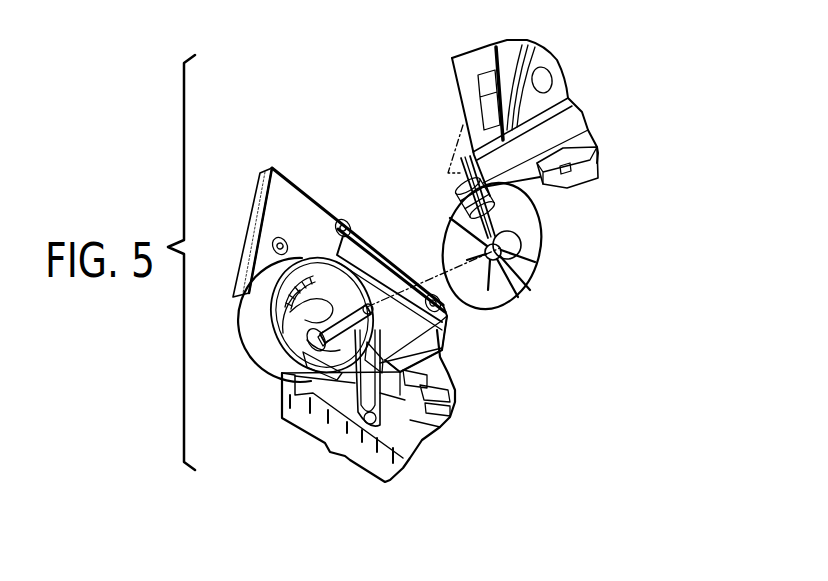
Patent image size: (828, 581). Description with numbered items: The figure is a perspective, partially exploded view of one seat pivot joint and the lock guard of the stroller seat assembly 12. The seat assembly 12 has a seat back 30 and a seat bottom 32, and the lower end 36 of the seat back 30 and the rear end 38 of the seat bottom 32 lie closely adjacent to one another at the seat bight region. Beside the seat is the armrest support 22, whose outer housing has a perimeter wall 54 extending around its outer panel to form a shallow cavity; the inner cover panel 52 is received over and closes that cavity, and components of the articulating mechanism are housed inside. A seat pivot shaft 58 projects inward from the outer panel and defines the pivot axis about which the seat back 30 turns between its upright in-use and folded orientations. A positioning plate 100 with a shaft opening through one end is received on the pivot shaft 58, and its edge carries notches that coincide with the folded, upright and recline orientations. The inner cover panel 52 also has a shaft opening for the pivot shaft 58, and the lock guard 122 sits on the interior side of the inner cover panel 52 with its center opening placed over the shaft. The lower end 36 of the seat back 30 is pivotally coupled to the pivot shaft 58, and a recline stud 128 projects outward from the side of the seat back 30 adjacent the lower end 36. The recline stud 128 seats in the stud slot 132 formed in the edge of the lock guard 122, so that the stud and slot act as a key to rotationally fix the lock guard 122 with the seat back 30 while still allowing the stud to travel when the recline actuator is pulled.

The seat assembly 12 is at (382, 0).
The armrest support 22 is at (260, 381).
The seat back 30 is at (567, 81).
The seat bottom 32 is at (456, 406).
The lower end 36 is at (583, 173).
The rear end 38 is at (435, 330).
The inner cover panel 52 is at (298, 197).
The perimeter wall 54 is at (257, 210).
The seat pivot shaft 58 is at (367, 305).
The positioning plate 100 is at (267, 352).
The lock guard 122 is at (533, 287).
The recline stud 128 is at (477, 177).
The stud slot 132 is at (448, 197).